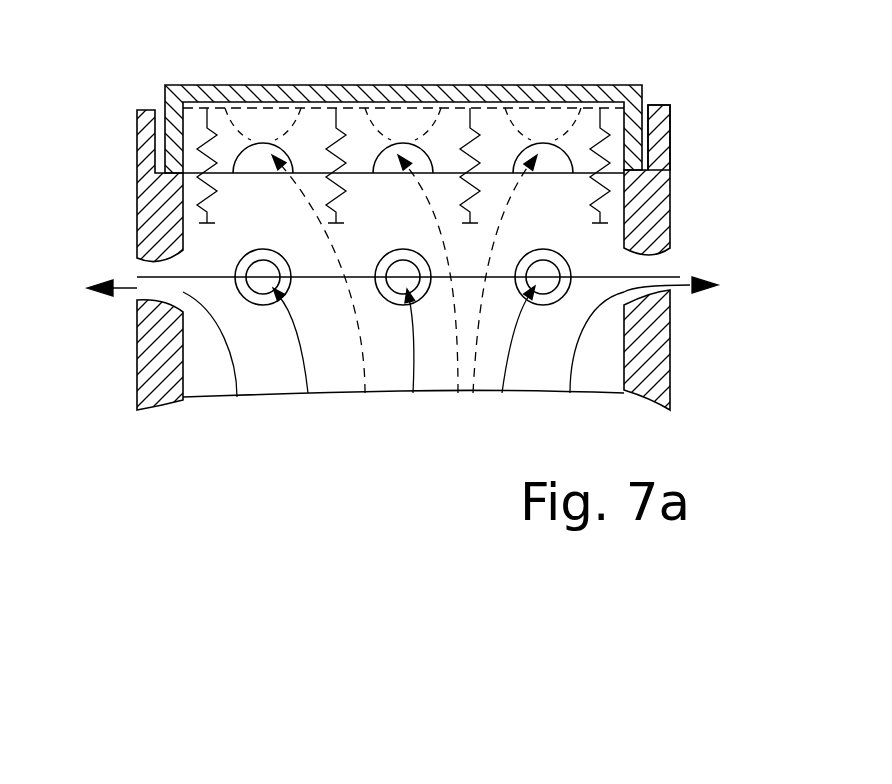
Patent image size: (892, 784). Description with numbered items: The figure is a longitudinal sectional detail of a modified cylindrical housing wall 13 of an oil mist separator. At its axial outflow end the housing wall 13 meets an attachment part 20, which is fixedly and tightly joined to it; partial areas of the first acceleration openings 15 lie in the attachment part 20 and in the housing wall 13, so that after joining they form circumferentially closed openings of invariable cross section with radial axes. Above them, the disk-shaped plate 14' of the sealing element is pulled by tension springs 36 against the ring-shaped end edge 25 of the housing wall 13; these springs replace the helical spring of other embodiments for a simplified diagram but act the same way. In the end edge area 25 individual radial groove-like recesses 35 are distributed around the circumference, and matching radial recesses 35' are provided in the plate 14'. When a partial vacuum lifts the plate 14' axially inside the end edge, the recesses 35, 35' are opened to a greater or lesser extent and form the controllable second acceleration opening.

The cylindrical housing wall 13 is at (650, 348).
The disk-shaped plate 14' is at (403, 89).
The first acceleration openings 15 is at (160, 266).
The attachment part 20 is at (668, 205).
The ring-shaped end edge 25 is at (663, 135).
The radial groove-like recesses 35 is at (409, 72).
The radial recesses in the disk-shaped plate 35' is at (502, 157).
The tension springs 36 is at (370, 143).